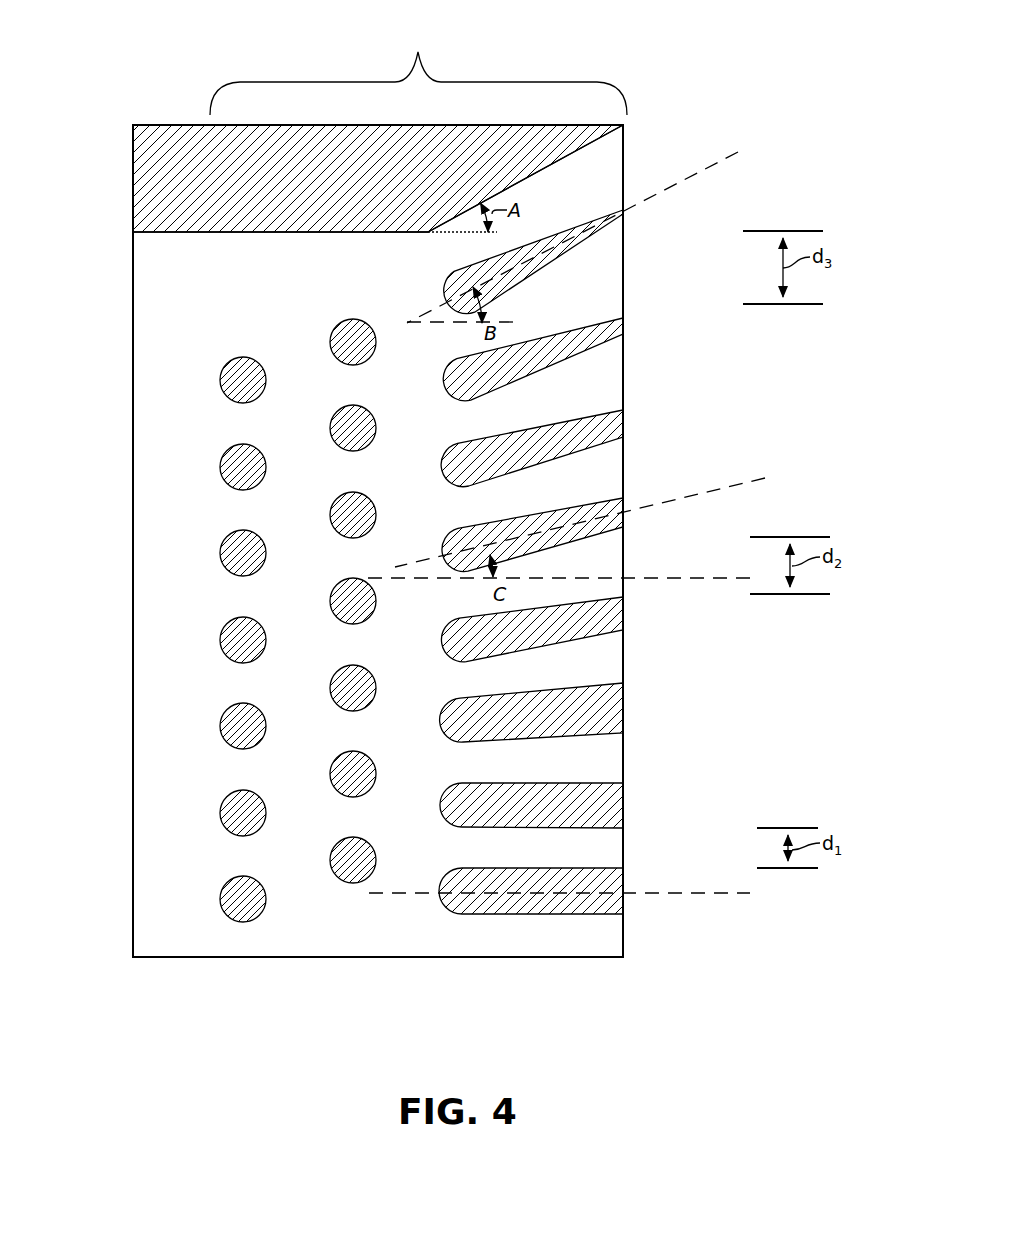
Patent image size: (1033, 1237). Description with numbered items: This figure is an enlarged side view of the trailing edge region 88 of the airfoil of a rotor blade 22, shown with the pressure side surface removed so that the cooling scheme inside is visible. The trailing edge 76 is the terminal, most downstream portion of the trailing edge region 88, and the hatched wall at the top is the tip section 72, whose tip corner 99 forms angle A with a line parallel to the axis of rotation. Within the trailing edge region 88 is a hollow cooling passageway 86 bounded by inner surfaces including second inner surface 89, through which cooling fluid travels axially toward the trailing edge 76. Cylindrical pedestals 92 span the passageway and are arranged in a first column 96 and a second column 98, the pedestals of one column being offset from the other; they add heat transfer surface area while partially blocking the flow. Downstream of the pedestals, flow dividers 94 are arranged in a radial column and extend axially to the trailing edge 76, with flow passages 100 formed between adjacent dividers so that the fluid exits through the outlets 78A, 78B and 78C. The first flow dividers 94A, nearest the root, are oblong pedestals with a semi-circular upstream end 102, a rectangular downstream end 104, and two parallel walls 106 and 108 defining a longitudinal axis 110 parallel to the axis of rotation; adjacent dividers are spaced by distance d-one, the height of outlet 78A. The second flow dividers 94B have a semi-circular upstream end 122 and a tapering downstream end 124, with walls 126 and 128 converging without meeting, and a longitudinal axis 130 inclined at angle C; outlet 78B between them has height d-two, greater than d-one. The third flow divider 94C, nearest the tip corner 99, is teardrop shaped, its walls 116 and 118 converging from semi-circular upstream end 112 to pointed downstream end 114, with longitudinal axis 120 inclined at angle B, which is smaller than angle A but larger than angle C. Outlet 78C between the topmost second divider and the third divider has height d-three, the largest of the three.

The rotor blade 22 is at (196, 60).
The tip section 72 is at (378, 178).
The trailing edge 76 is at (632, 137).
The cooling passageway 86 is at (270, 512).
The trailing edge region 88 is at (418, 71).
The second inner surface 89 is at (280, 290).
The pedestals 92 is at (295, 679).
The flow dividers 94 is at (579, 642).
The first flow dividers 94A is at (612, 815).
The second flow dividers 94B is at (615, 330).
The third flow divider 94C is at (615, 229).
The first column 96 is at (244, 974).
The second column 98 is at (355, 962).
The tip corner 99 is at (518, 182).
The flow passages 100 is at (535, 220).
The upstream end 102 is at (440, 895).
The downstream end 104 is at (625, 886).
The wall 106 is at (462, 868).
The wall 108 is at (510, 915).
The longitudinal axis 110 is at (738, 895).
The upstream end 112 is at (440, 296).
The downstream end 114 is at (626, 206).
The wall 116 is at (485, 296).
The wall 118 is at (462, 271).
The longitudinal axis 120 is at (738, 150).
The upstream end 122 is at (440, 553).
The downstream end 124 is at (626, 505).
The wall 126 is at (543, 553).
The wall 128 is at (463, 528).
The longitudinal axis 130 is at (762, 476).
The outlet 78A is at (632, 848).
The outlet 78B is at (632, 565).
The outlet 78C is at (632, 276).